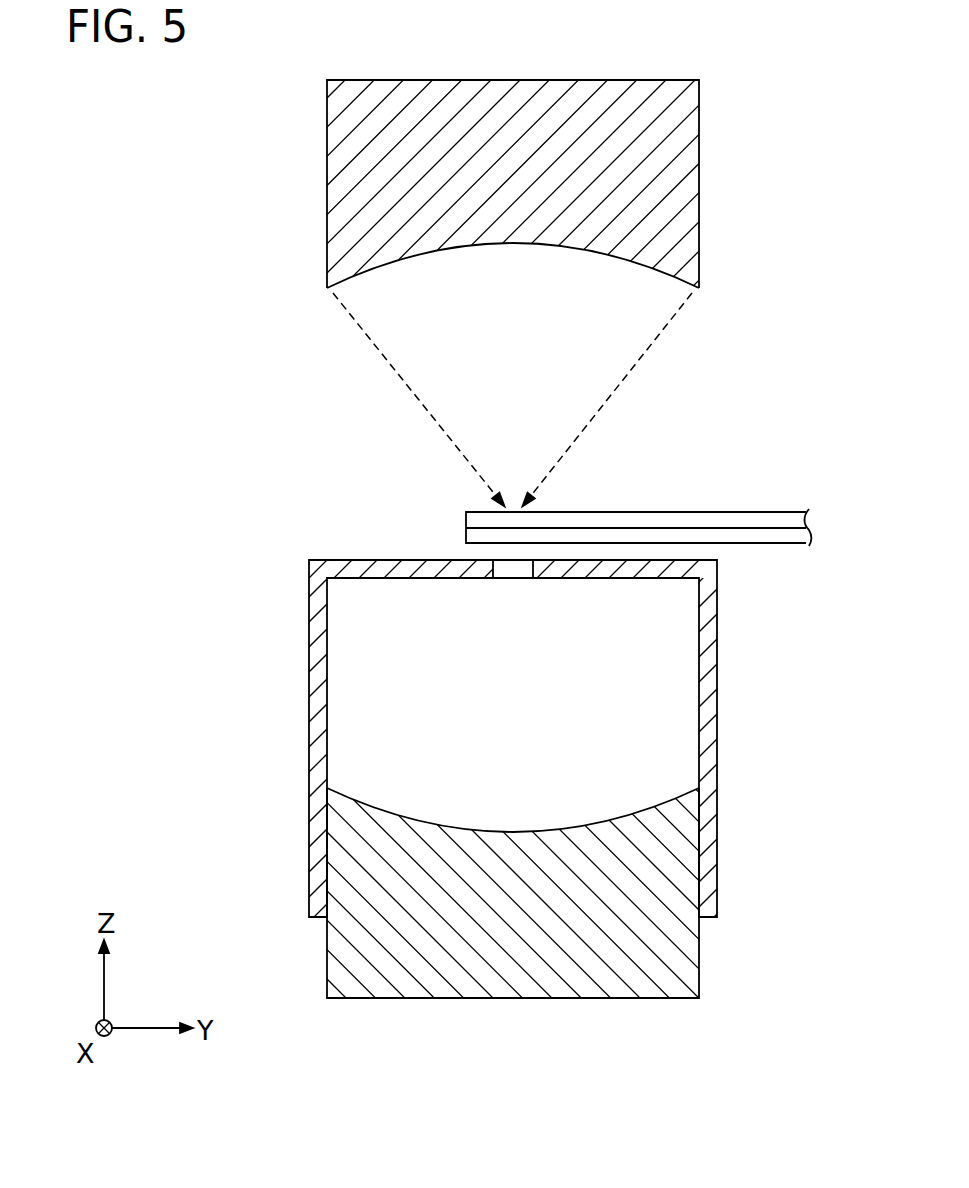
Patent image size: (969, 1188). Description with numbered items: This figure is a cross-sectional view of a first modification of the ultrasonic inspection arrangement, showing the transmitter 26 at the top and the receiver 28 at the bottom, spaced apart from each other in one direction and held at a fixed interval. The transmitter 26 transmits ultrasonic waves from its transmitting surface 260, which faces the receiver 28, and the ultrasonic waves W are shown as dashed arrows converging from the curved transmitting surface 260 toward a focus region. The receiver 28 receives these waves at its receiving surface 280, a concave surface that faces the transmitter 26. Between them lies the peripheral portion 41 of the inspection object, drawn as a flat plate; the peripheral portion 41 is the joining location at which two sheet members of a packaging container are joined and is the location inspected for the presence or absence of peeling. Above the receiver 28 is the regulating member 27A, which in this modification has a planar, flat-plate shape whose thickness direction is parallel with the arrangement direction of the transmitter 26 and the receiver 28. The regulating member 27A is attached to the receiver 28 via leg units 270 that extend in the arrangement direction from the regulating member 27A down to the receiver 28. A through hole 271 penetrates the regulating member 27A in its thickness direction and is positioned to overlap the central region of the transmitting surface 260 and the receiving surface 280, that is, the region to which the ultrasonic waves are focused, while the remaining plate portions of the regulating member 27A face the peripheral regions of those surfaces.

The transmitter 26 is at (327, 176).
The transmitting surface 260 is at (459, 250).
The pressing direction / load W is at (512, 400).
The peripheral portion 41 is at (642, 512).
The leg units 270 is at (309, 683).
The regulating member 27A is at (393, 578).
The through hole 271 is at (512, 578).
The receiver 28 is at (327, 953).
The receiving surface 280 is at (452, 828).